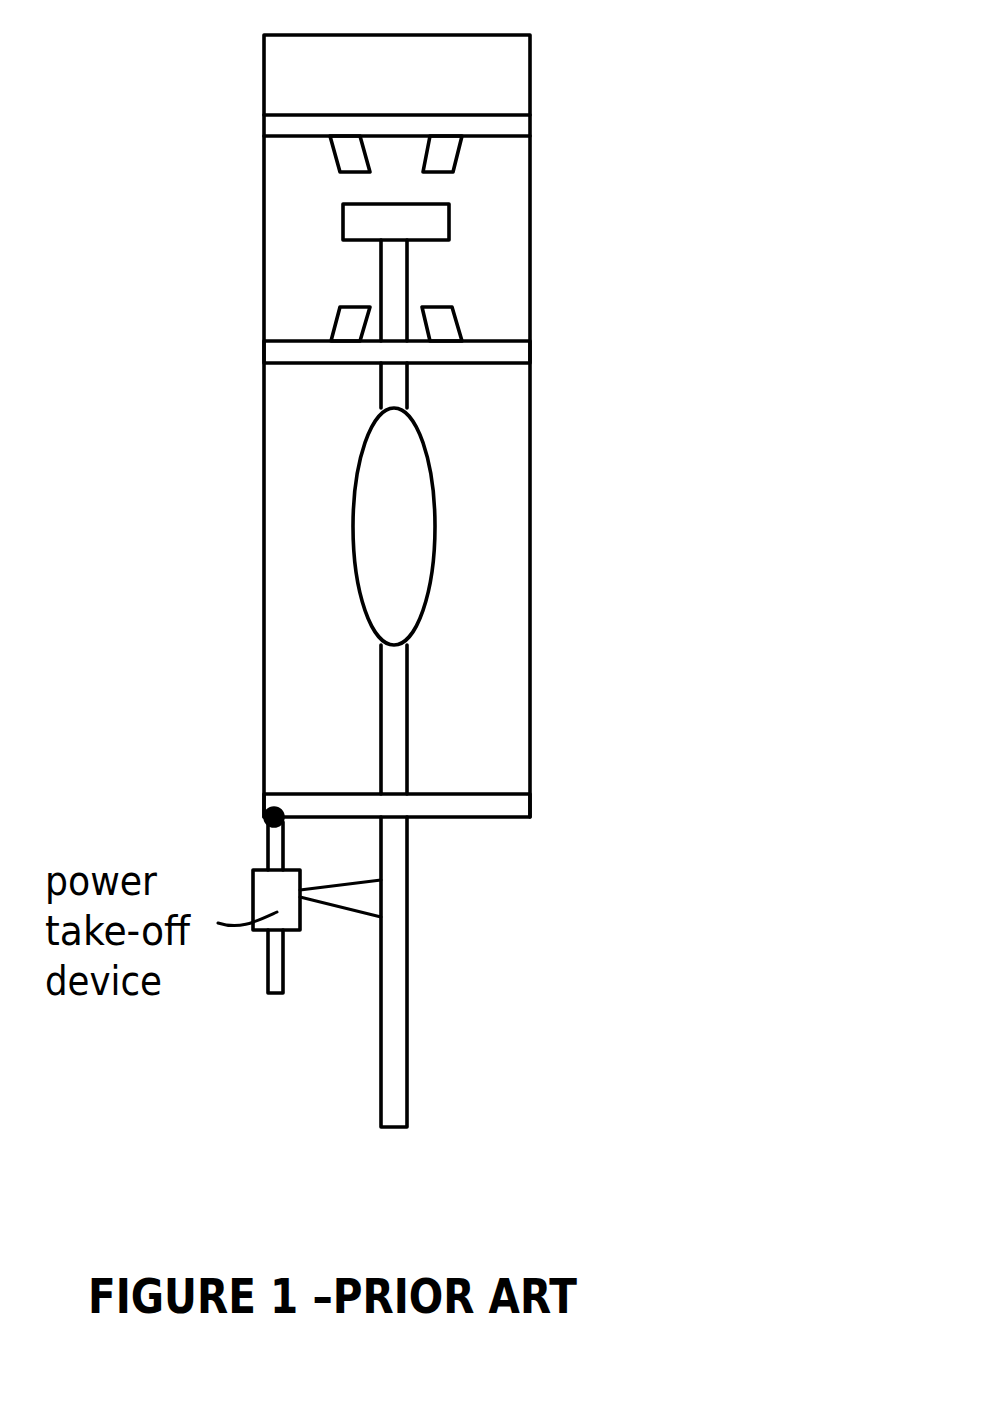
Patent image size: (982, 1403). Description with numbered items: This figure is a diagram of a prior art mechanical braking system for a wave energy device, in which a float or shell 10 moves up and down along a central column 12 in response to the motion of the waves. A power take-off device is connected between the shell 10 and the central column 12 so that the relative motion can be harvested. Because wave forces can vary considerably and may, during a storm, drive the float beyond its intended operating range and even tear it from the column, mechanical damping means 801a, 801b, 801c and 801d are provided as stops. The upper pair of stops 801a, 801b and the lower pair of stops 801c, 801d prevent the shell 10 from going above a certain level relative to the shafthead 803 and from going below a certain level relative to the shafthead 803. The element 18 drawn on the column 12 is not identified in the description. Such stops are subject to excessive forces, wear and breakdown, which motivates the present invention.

The float 10 is at (520, 83).
The column 12 is at (392, 932).
The oscillating mass / float 18 is at (427, 512).
The shafthead 803 is at (430, 228).
The mechanical damping means 801a is at (350, 155).
The mechanical damping means 801b is at (447, 158).
The mechanical damping means 801c is at (340, 323).
The mechanical damping means 801d is at (450, 323).